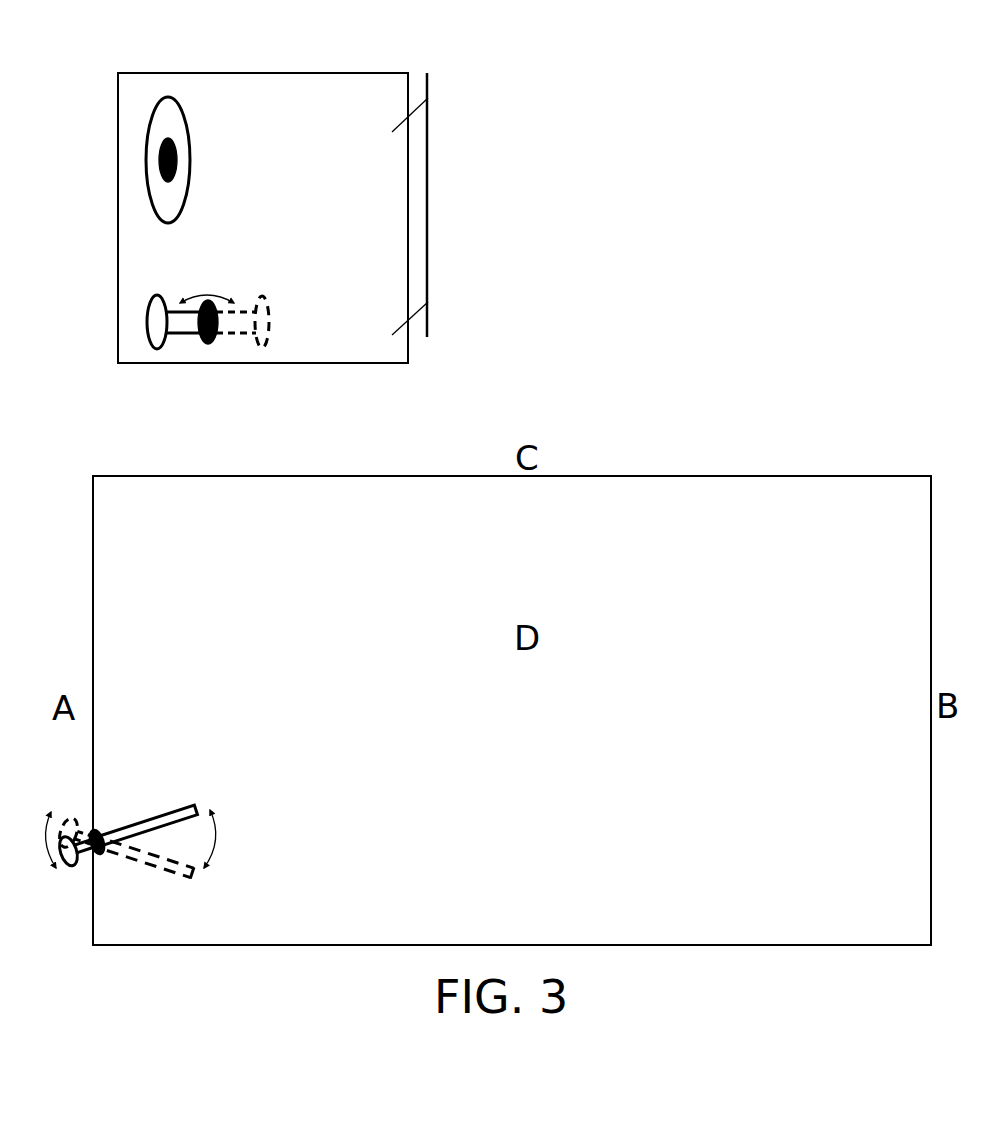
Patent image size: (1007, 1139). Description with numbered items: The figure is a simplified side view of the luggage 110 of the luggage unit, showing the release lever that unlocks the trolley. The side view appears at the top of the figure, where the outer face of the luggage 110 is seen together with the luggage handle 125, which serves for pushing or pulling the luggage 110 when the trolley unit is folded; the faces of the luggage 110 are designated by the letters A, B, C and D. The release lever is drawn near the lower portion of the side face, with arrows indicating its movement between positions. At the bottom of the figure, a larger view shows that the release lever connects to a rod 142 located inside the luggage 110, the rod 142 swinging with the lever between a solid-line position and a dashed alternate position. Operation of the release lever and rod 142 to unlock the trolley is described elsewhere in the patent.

The luggage 110 is at (243, 72).
The luggage handle 125 is at (192, 125).
The rod 142 is at (188, 807).